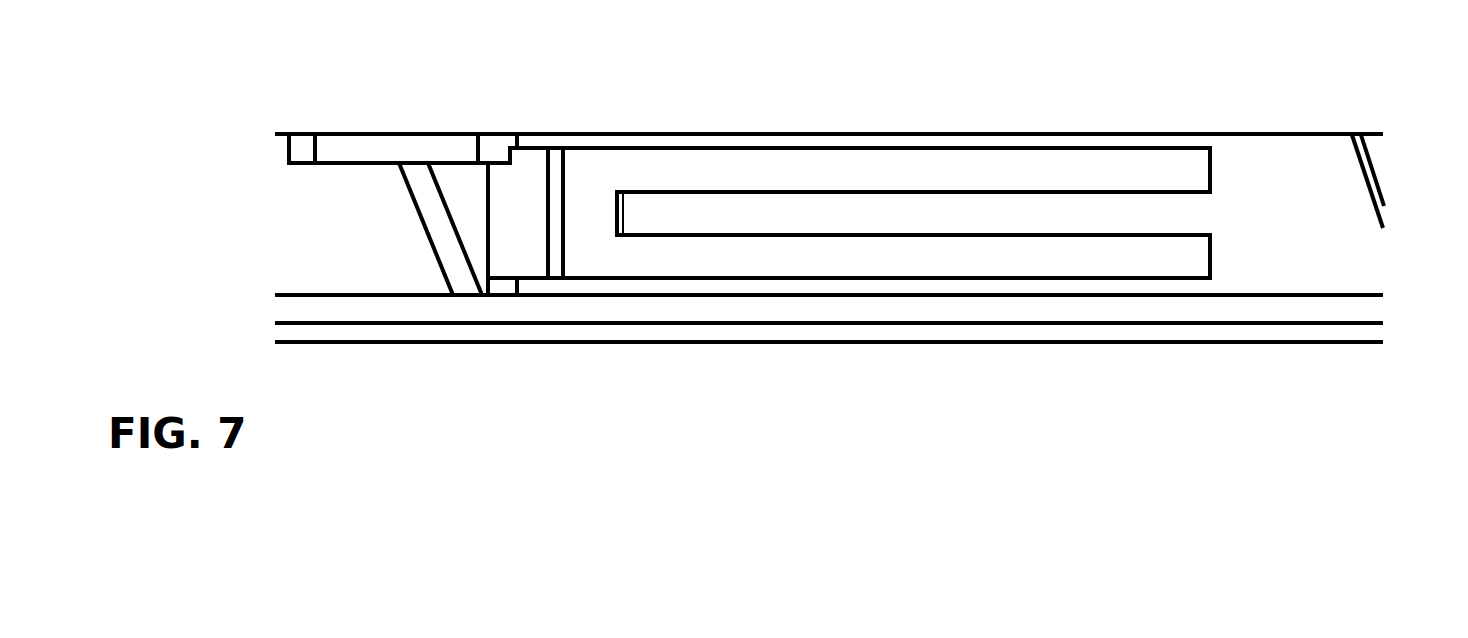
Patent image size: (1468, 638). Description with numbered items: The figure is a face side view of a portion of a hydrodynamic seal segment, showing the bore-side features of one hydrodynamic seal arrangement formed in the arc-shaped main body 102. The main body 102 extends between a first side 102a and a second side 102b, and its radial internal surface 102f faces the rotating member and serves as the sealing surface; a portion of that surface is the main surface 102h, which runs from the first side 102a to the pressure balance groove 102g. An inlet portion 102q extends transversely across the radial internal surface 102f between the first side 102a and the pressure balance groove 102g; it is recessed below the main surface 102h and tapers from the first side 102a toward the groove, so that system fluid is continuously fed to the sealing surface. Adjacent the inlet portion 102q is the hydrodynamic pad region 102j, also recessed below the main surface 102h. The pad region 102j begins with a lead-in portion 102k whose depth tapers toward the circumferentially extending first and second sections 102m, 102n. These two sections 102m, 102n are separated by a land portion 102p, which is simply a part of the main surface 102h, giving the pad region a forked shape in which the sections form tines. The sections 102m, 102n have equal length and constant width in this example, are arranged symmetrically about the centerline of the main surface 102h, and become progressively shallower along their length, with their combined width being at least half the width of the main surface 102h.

The main body 102 is at (297, 218).
The first side 102a is at (1015, 133).
The second side 102b is at (1140, 343).
The radial internal surface 102f is at (1250, 283).
The pressure balance groove 102g is at (1053, 313).
The main surface 102h is at (1345, 283).
The hydrodynamic pad region 102j is at (530, 238).
The lead-in portion 102k is at (554, 202).
The first section 102m is at (837, 218).
The second section 102n is at (803, 177).
The land portion 102p is at (878, 262).
The inlet portion 102q is at (413, 155).